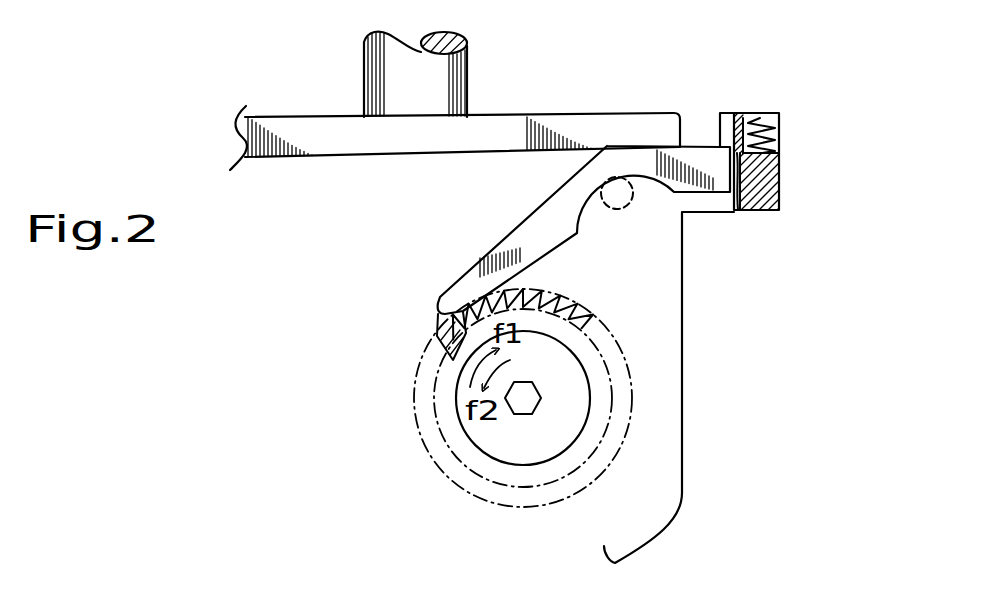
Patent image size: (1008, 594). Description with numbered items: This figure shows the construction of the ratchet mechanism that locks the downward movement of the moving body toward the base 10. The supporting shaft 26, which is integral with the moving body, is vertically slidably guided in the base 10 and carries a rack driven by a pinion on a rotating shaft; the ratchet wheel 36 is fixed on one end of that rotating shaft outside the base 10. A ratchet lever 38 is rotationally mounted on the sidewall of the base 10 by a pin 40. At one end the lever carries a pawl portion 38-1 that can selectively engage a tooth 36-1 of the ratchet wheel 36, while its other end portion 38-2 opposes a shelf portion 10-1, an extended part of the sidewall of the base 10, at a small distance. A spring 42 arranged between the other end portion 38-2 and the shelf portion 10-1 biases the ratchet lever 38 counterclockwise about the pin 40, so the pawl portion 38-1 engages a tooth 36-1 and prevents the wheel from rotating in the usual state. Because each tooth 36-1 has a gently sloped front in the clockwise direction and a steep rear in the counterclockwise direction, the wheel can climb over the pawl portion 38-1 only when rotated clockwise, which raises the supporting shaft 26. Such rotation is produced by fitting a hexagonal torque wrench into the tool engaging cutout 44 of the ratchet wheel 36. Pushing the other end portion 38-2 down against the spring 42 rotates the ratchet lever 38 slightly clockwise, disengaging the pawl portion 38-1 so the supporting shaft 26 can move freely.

The base 10 is at (670, 357).
The shelf portion 10-1 is at (760, 198).
The supporting shaft 26 is at (450, 87).
The ratchet wheel 36 is at (610, 410).
The tooth 36-1 is at (463, 357).
The ratchet lever 38 is at (553, 233).
The pawl portion 38-1 is at (437, 313).
The other end portion 38-2 is at (750, 112).
The pin 40 is at (617, 177).
The spring 42 is at (779, 143).
The tool engaging cutout 44 is at (527, 413).